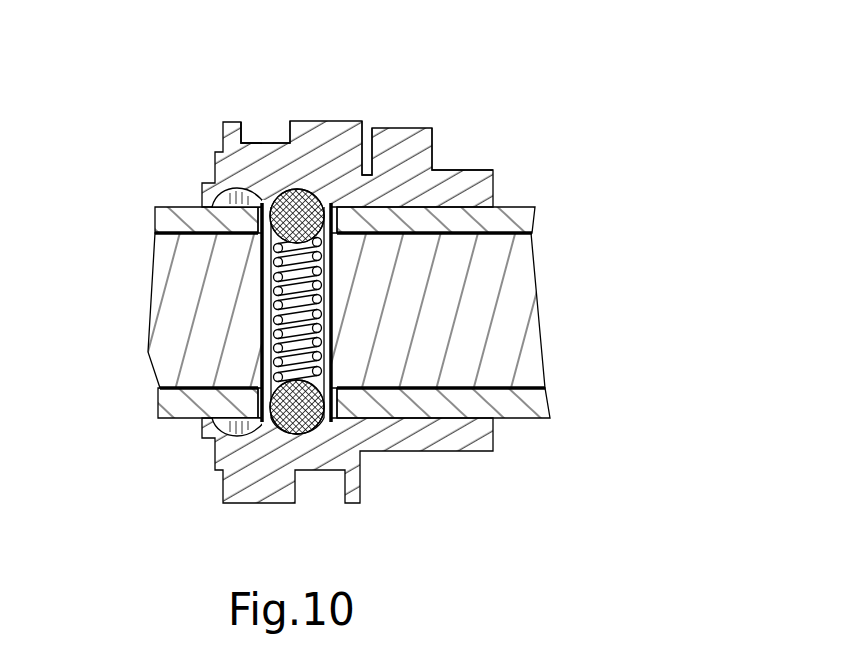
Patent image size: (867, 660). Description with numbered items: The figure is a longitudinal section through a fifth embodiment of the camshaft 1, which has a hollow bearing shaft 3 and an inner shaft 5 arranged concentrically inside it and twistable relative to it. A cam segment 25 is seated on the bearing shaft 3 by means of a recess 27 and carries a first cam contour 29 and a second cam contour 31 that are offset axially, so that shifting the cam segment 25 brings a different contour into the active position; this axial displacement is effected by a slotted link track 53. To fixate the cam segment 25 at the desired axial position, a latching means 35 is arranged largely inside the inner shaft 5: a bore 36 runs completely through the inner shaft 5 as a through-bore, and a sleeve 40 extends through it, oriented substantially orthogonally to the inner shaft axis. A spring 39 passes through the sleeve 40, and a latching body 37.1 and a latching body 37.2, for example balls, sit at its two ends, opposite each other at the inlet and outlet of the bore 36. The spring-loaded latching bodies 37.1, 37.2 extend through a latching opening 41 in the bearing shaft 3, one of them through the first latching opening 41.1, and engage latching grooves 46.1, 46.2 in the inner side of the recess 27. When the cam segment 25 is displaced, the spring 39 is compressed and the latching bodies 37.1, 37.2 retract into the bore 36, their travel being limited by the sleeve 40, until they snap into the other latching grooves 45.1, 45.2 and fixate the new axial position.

The camshaft 1 is at (303, 285).
The bearing shaft 3 is at (533, 412).
The inner shaft 5 is at (516, 347).
The cam segment 25 is at (357, 485).
The recess 27 is at (322, 116).
The first cam contour 29 is at (400, 126).
The second cam contour 31 is at (466, 168).
The latching means 35 is at (223, 328).
The bore 36 is at (262, 372).
The latching body 37.1 is at (258, 218).
The latching body 37.2 is at (265, 402).
The spring 39 is at (260, 316).
The sleeve 40 is at (262, 347).
The latching opening 41 is at (327, 197).
The first latching opening 41.1 is at (330, 410).
The latching groove 45.1 is at (213, 203).
The latching groove 45.2 is at (235, 445).
The latching groove 46.1 is at (241, 140).
The latching groove 46.2 is at (306, 425).
The slotted link track 53 is at (261, 140).